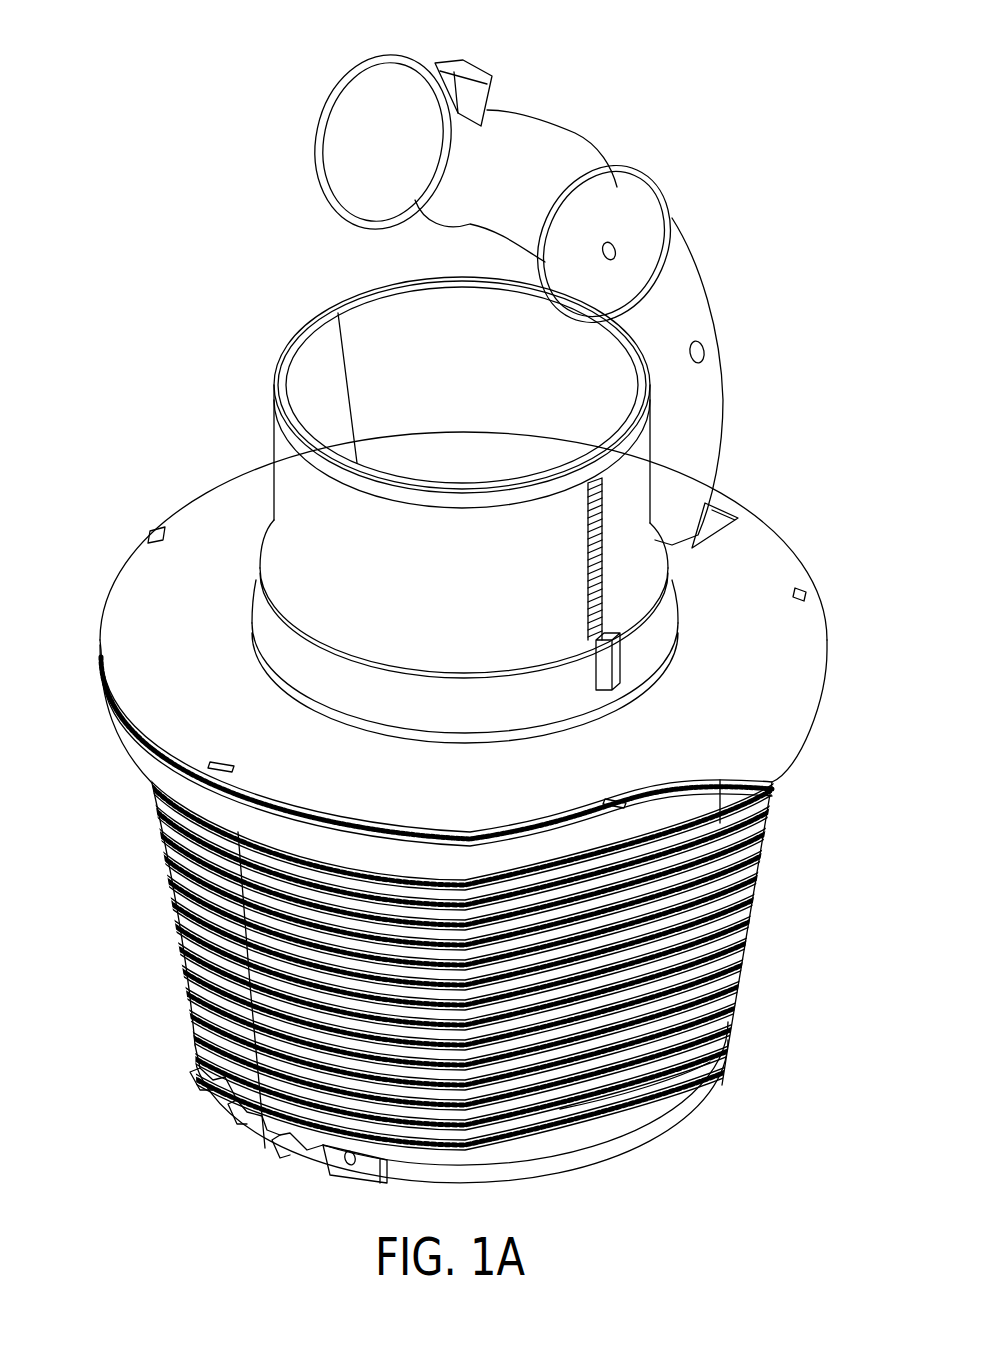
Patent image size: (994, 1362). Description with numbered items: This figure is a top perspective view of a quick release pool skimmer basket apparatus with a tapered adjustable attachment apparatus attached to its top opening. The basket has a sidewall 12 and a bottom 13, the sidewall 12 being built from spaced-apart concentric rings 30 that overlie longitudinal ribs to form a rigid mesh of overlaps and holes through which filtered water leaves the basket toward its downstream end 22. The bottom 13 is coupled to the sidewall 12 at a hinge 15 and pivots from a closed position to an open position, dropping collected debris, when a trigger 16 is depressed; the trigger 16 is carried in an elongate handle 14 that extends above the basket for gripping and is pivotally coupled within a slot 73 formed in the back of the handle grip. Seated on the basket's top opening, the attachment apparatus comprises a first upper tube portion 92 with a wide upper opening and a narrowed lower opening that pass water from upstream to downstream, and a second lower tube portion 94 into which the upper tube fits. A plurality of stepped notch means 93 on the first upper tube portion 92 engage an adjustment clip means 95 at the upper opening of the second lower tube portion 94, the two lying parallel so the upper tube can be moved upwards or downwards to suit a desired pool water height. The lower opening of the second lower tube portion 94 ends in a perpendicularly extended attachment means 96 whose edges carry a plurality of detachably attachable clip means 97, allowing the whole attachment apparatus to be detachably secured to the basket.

The sidewall 12 is at (746, 946).
The bottom 13 is at (708, 1097).
The elongate handle 14 is at (706, 296).
The hinge 15 is at (302, 1152).
The trigger 16 is at (457, 62).
The downstream end 22 is at (188, 1052).
The concentric rings 30 is at (600, 1058).
The slot 73 is at (466, 116).
The first upper tube portion 92 is at (282, 466).
The stepped notch means 93 is at (596, 570).
The second lower tube portion 94 is at (355, 687).
The adjustment clip means 95 is at (606, 672).
The perpendicularly extended attachment means 96 is at (160, 609).
The detachably attachable clip means 97 is at (150, 537).